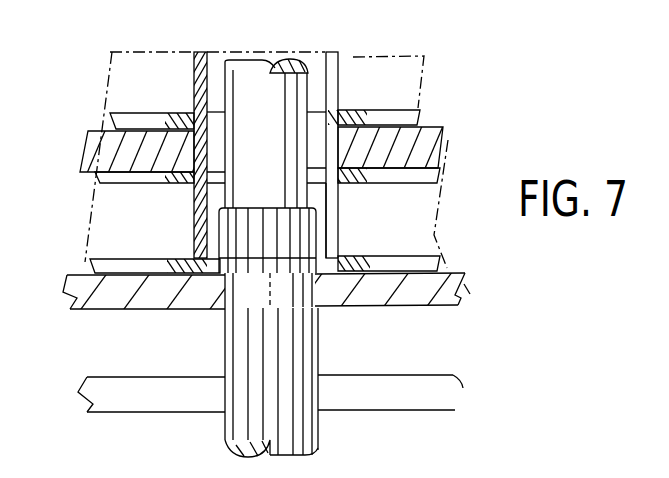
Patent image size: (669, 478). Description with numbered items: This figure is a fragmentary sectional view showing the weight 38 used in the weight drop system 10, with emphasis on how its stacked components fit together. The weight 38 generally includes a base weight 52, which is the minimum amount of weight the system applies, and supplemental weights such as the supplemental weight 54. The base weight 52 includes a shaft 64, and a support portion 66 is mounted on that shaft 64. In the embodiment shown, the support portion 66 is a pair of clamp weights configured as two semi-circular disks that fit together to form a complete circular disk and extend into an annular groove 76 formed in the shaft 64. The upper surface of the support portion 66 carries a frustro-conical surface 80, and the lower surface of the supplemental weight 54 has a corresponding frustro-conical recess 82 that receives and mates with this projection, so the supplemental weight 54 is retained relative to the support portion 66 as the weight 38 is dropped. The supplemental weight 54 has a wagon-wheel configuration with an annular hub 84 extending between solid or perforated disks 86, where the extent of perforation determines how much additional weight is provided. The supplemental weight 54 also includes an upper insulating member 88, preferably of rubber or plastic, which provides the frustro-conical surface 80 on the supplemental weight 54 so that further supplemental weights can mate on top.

The weight drop system 10 is at (87, 57).
The weight 38 is at (192, 47).
The supplemental weight 54 is at (343, 60).
The upper insulating member 88 is at (437, 130).
The disks 86 is at (105, 188).
The frustro-conical recess 82 is at (193, 257).
The annular hub 84 is at (340, 220).
The frustro-conical surface 80 is at (347, 257).
The support portion 66 is at (428, 302).
The annular groove 76 is at (313, 308).
The base weight 52 is at (223, 352).
The shaft 64 is at (323, 422).